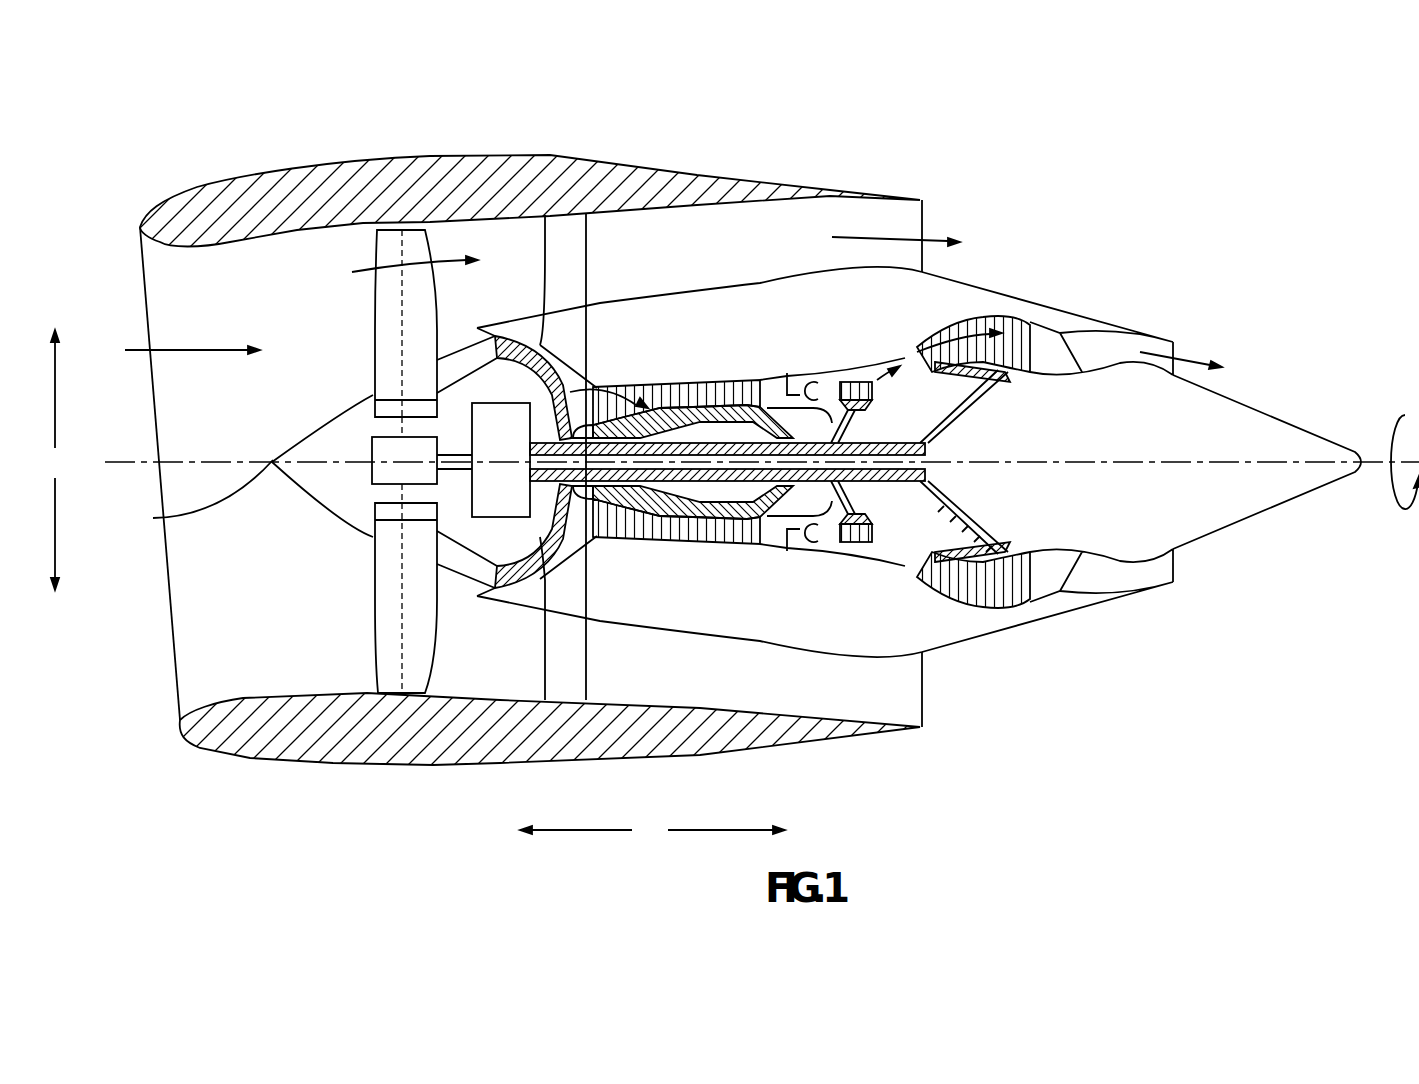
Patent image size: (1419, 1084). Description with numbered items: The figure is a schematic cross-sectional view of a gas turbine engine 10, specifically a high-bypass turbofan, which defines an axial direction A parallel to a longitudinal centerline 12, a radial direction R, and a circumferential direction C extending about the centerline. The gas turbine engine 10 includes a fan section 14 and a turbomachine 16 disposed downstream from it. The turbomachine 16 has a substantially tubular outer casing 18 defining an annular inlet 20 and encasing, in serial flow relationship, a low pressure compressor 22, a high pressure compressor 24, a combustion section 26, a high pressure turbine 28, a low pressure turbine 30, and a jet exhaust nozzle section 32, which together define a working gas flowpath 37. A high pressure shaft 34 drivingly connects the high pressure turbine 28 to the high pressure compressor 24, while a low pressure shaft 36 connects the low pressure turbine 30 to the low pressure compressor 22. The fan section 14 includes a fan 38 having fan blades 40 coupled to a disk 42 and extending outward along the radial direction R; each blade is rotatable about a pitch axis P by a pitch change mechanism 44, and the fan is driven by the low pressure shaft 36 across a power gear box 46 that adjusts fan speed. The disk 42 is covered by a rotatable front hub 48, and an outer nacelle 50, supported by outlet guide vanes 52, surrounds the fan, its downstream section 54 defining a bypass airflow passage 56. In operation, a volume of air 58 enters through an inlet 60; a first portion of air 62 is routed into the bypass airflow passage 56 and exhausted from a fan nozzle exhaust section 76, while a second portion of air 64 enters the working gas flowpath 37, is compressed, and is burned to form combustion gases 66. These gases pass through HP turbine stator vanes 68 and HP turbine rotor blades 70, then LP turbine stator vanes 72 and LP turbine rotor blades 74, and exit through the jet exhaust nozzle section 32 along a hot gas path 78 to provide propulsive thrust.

The gas turbine engine 10 is at (1092, 163).
The longitudinal centerline 12 is at (1120, 457).
The fan section 14 is at (338, 243).
The turbomachine 16 is at (722, 301).
The outer casing 18 is at (743, 640).
The annular inlet 20 is at (480, 578).
The low pressure compressor 22 is at (540, 545).
The high pressure compressor 24 is at (626, 536).
The combustion section 26 is at (810, 543).
The high pressure turbine 28 is at (888, 535).
The low pressure turbine 30 is at (1010, 618).
The jet exhaust nozzle section 32 is at (1085, 598).
The high pressure shaft 34 is at (827, 423).
The low pressure shaft 36 is at (917, 440).
The working gas flowpath 37 is at (575, 524).
The fan 38 is at (325, 523).
The fan blades 40 is at (372, 610).
The disk 42 is at (373, 395).
The pitch change mechanism 44 is at (370, 442).
The power gear box 46 is at (517, 423).
The front hub 48 is at (197, 498).
The outer nacelle 50 is at (422, 760).
The outlet guide vanes 52 is at (587, 270).
The downstream section 54 is at (850, 185).
The bypass airflow passage 56 is at (783, 237).
The volume of air 58 is at (196, 348).
The inlet 60 is at (172, 697).
The first portion of air 62 is at (387, 272).
The second portion of air 64 is at (453, 343).
The combustion gases 66 is at (973, 320).
The HP turbine stator vanes 68 is at (827, 540).
The HP turbine rotor blades 70 is at (847, 530).
The LP turbine stator vanes 72 is at (927, 587).
The LP turbine rotor blades 74 is at (940, 590).
The fan nozzle exhaust section 76 is at (910, 222).
The hot gas path 78 is at (907, 348).
The pitch axis P is at (403, 247).
The radial direction R is at (55, 460).
The axial direction A is at (652, 830).
The circumferential direction C is at (1405, 479).